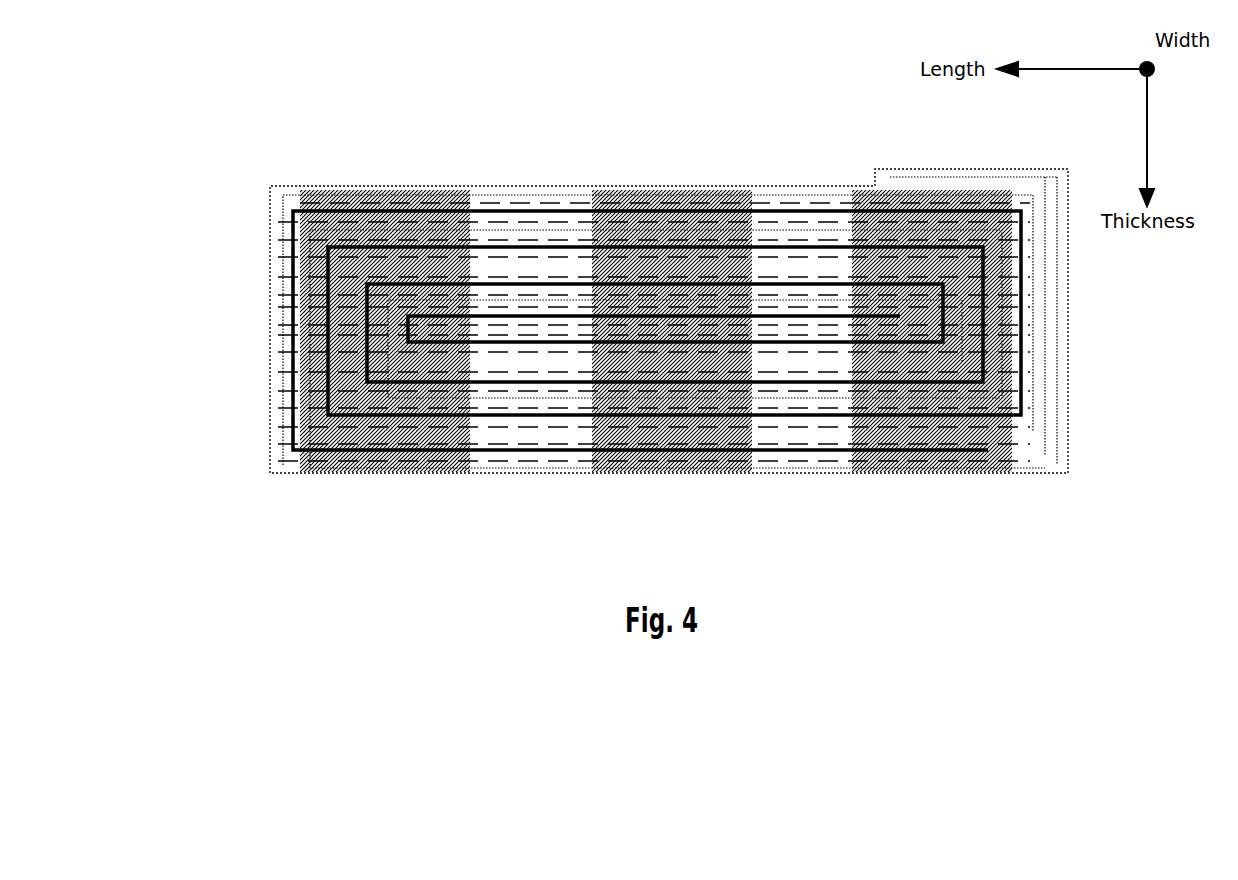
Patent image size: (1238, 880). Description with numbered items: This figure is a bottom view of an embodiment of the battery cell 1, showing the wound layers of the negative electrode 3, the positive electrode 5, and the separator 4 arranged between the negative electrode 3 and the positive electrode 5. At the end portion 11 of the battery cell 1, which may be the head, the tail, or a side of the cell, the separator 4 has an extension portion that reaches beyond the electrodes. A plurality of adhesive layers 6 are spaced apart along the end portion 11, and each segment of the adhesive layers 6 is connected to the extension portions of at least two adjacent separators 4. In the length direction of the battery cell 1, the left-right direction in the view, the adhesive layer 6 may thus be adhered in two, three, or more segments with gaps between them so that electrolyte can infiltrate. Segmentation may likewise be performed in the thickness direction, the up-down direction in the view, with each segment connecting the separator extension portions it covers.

The battery cell 1 is at (447, 172).
The end portion 11 is at (250, 226).
The positive electrode 5 is at (288, 280).
The separator 4 is at (288, 337).
The negative electrode 3 is at (288, 398).
The adhesive layer 6 is at (490, 473).